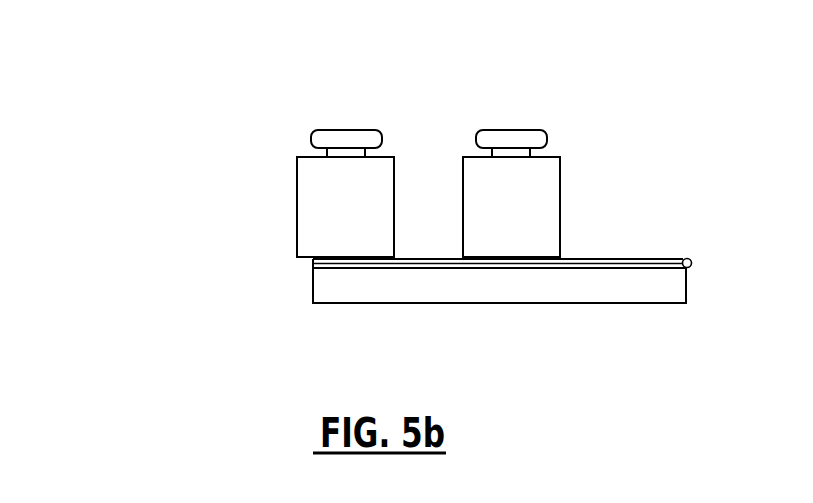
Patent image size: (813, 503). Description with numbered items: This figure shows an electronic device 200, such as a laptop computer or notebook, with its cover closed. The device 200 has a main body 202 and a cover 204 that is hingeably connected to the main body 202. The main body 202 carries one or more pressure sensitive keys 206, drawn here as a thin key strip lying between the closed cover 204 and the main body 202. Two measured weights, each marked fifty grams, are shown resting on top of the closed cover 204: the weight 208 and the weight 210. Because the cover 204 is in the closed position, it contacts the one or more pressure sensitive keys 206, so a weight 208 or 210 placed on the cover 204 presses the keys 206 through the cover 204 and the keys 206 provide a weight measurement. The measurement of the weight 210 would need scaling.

The electronic device 200 is at (165, 98).
The main body 202 is at (667, 308).
The cover 204 is at (312, 268).
The pressure sensitive keys 206 is at (312, 270).
The weight 208 is at (308, 150).
The weight 210 is at (560, 210).